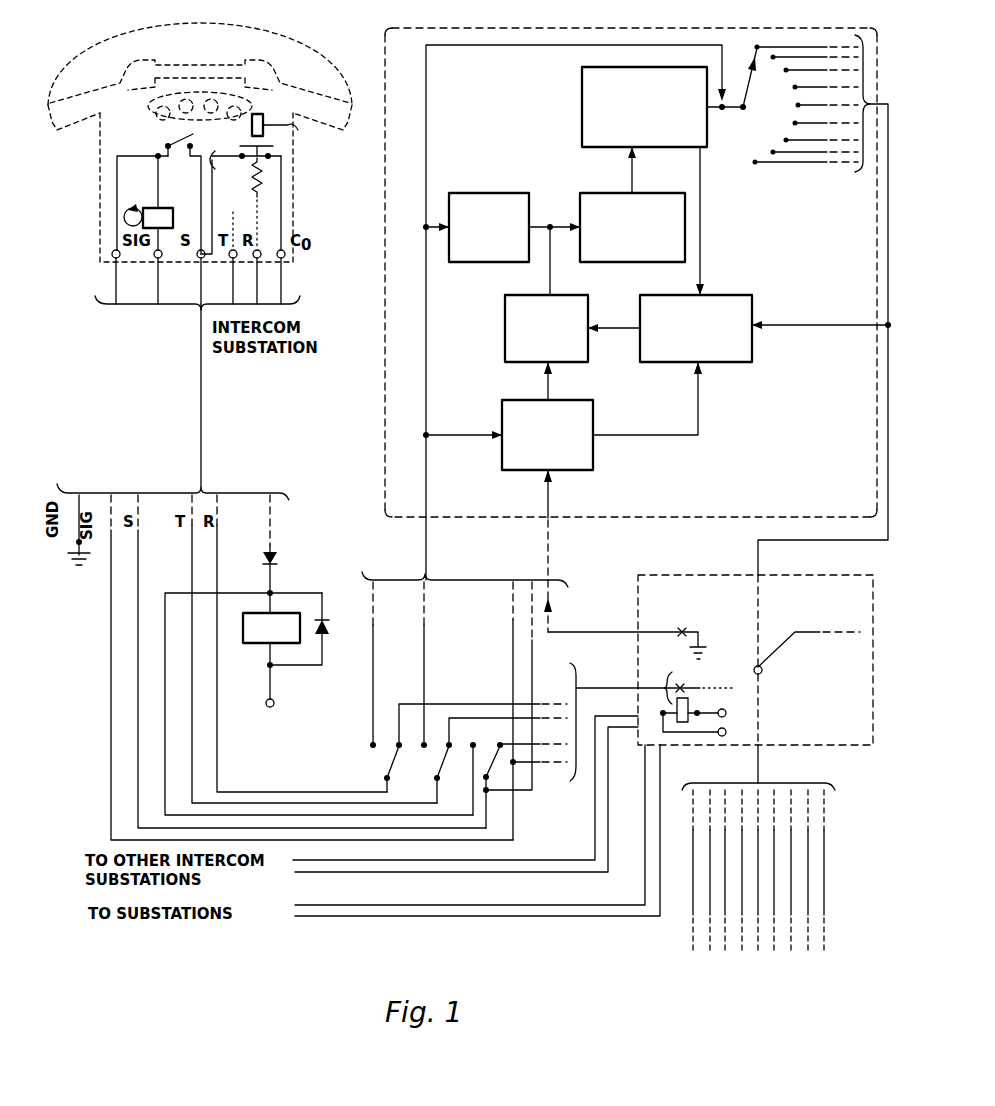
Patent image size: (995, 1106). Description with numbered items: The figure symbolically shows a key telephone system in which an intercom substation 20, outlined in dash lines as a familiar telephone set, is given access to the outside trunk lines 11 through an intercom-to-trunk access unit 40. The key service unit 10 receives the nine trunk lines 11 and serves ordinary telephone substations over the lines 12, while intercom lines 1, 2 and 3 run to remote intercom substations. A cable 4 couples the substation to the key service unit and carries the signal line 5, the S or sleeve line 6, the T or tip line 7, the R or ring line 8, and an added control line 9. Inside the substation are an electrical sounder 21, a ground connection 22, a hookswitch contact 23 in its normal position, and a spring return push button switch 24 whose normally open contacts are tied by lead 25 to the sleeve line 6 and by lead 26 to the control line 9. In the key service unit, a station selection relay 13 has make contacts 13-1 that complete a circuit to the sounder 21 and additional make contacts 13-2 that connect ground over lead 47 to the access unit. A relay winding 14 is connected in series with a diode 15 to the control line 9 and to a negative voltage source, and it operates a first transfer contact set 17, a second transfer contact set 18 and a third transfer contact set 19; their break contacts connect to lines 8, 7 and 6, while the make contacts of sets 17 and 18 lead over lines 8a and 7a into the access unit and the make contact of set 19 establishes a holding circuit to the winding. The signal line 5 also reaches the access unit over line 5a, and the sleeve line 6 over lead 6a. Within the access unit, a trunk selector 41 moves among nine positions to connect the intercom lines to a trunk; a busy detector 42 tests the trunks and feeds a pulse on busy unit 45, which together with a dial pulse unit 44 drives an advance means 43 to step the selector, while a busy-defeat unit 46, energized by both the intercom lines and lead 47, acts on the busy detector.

The intercom line 1 is at (570, 857).
The intercom line 2 is at (570, 873).
The intercom line 3 is at (600, 687).
The cable 4 is at (201, 420).
The signal line 5 is at (158, 285).
The S or sleeve line 6 is at (201, 285).
The T or tip line 7 is at (233, 285).
The R or ring line 8 is at (257, 285).
The control line 9 is at (281, 285).
The key service unit 10 is at (722, 575).
The trunk lines 11 is at (758, 775).
The telephone lines 12 is at (435, 917).
The station selection relay 13 is at (688, 705).
The make contacts 13-1 is at (686, 687).
The make contacts 13-2 is at (682, 627).
The relay winding 14 is at (246, 645).
The diode 15 is at (277, 561).
The first transfer contact set 17 is at (386, 752).
The second transfer contact set 18 is at (437, 752).
The third transfer contact set 19 is at (491, 748).
The intercom substation 20 is at (192, 50).
The electrical sounder 21 is at (165, 208).
The ground connection 22 is at (116, 274).
The hookswitch contact 23 is at (167, 146).
The spring return push button switch 24 is at (286, 127).
The electrical lead 25 is at (241, 191).
The electrical lead 26 is at (281, 194).
The intercom-to-trunk access unit 40 is at (613, 28).
The trunk selector 41 is at (582, 86).
The busy detector 42 is at (718, 295).
The advance means 43 is at (648, 193).
The dial pulse unit 44 is at (497, 193).
The pulse on busy unit 45 is at (557, 295).
The busy-defeat unit 46 is at (570, 400).
The electrical lead 47 is at (548, 505).
The line 5a is at (513, 623).
The lead 6a is at (532, 652).
The line 7a is at (425, 631).
The line 8a is at (374, 631).